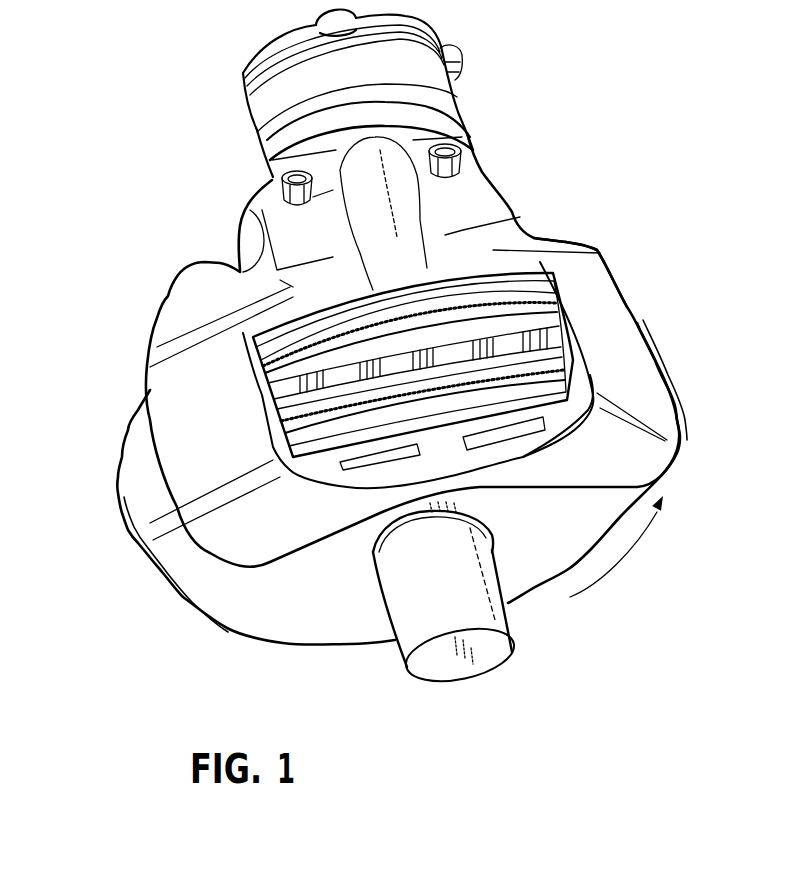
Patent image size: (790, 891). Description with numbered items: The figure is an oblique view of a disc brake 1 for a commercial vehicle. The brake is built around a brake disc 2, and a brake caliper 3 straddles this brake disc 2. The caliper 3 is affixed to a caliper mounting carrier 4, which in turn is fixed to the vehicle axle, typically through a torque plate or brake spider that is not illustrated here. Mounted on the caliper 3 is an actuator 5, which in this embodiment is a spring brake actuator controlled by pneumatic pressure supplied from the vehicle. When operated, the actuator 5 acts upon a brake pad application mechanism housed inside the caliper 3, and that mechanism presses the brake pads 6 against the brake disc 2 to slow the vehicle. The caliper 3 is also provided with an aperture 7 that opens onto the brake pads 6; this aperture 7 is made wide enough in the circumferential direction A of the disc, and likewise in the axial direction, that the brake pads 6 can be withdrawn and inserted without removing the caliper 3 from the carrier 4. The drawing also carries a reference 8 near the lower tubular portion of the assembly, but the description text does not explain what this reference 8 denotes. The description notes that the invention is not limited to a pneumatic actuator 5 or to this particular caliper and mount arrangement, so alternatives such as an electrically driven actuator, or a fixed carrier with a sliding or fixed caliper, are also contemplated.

The disc brake 1 is at (142, 208).
The brake disc 2 is at (157, 435).
The brake caliper 3 is at (618, 277).
The caliper mounting carrier 4 is at (137, 523).
The actuator 5 is at (393, 110).
The brake pads 6 is at (477, 405).
The aperture 7 is at (273, 421).
The outlet tube 8 is at (457, 667).
The circumferential direction A is at (630, 553).